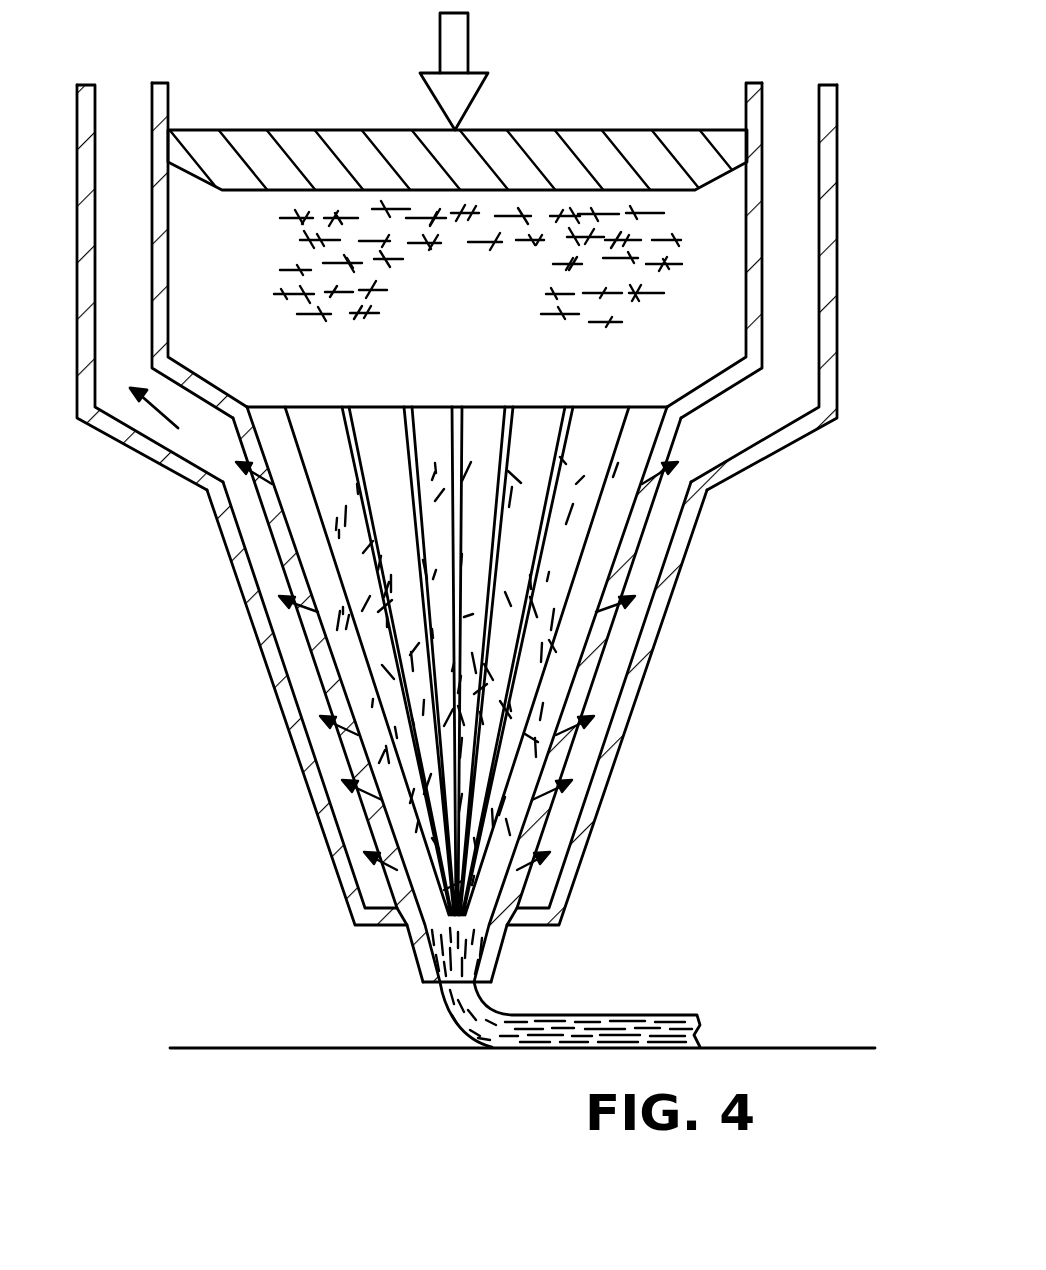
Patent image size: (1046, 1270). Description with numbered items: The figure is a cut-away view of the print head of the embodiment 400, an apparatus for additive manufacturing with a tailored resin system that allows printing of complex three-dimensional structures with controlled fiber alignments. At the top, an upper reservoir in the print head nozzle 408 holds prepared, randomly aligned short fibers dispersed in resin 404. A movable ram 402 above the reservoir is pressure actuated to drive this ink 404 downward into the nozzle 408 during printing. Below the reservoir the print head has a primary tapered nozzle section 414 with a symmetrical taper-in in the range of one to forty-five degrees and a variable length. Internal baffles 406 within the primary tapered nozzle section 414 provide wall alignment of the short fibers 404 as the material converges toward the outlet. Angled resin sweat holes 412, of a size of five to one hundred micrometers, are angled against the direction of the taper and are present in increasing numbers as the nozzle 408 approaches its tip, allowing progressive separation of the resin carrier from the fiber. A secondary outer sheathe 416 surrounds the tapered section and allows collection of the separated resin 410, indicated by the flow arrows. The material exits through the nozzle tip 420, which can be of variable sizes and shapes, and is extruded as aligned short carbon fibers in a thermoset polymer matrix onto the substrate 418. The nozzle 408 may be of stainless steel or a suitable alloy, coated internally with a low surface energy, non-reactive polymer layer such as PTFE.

The embodiment 400 is at (616, 37).
The movable ram 402 is at (459, 102).
The randomly aligned short fibers dispersed in resin 404 is at (515, 299).
The internal baffles 406 is at (452, 405).
The print head nozzle 408 is at (492, 501).
The separated resin 410 is at (160, 414).
The angled resin sweat holes 412 is at (257, 483).
The primary tapered nozzle section 414 is at (280, 547).
The secondary outer sheathe 416 is at (307, 787).
The substrate 418 is at (287, 1047).
The nozzle tip 420 is at (489, 975).